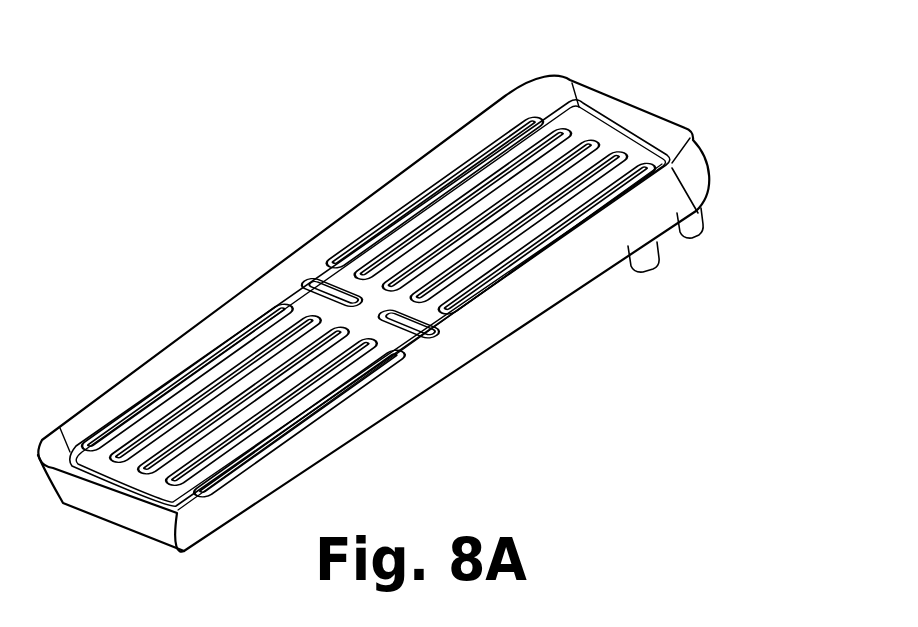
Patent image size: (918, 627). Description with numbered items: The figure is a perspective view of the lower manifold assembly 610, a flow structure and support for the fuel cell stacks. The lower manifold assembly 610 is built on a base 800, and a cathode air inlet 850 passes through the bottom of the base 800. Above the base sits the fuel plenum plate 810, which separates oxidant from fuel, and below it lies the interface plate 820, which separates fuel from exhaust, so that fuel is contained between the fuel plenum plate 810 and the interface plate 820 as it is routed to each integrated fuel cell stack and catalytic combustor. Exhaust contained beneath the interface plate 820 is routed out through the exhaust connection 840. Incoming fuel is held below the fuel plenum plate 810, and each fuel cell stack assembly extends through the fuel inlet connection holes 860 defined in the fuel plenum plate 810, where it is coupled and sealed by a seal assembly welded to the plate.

The lower manifold assembly 610 is at (640, 35).
The base 800 is at (455, 352).
The fuel plenum plate 810 is at (372, 303).
The interface plate 820 is at (328, 282).
The exhaust connection 840 is at (683, 227).
The cathode air inlet 850 is at (641, 262).
The fuel inlet connection holes 860 is at (205, 362).